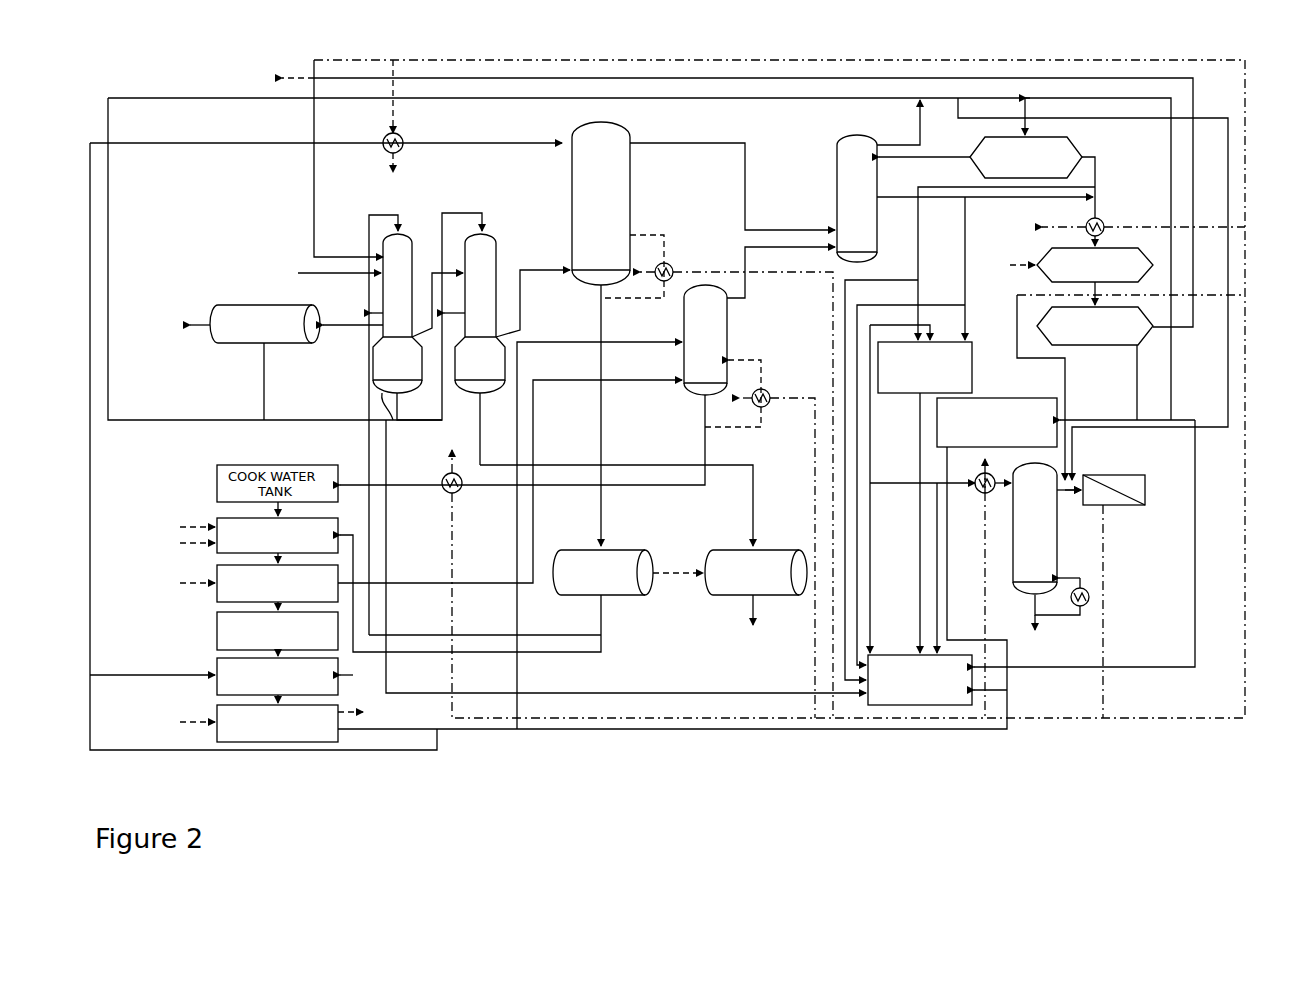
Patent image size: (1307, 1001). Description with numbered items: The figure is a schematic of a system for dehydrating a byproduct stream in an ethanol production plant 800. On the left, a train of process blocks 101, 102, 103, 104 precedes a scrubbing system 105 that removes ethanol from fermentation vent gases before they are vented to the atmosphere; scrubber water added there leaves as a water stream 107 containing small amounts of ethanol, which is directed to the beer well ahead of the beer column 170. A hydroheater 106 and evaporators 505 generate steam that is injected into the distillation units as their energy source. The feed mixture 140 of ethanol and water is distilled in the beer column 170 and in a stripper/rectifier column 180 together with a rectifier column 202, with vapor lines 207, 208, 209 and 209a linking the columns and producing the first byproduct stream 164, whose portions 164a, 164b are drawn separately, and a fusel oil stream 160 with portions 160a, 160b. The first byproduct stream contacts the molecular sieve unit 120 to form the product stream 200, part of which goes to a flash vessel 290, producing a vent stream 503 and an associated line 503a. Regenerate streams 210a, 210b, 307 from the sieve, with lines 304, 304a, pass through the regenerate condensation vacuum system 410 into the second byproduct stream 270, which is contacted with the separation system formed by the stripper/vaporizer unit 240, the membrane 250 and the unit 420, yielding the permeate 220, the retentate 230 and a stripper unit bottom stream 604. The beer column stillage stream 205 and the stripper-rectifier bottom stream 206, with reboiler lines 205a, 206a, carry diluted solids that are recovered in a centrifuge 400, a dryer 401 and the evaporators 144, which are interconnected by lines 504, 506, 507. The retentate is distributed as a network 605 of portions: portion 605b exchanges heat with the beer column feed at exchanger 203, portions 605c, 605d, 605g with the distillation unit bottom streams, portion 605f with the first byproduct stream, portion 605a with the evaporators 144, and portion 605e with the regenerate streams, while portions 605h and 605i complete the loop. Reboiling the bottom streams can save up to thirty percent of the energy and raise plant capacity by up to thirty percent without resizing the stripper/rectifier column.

The slurry tank 101 is at (224, 540).
The hydroheater 102 is at (240, 587).
The liquefaction 103 is at (277, 634).
The fermentation 104 is at (370, 619).
The scrubbing system 105 is at (274, 721).
The hydroheater 106 is at (482, 582).
The water stream 107 is at (400, 732).
The MSU 120 is at (1150, 335).
The feed mixture 140 is at (233, 145).
The evaporators 144 is at (379, 424).
The fusel oil stream 160 is at (890, 197).
The portion of the fusel oil stream 160a is at (962, 250).
The portion of the fusel oil stream 160b is at (895, 290).
The first byproduct stream 164 is at (1095, 172).
The portion of the first byproduct stream 164a is at (980, 186).
The portion of the first byproduct stream 164b is at (908, 258).
The beer column 170 is at (630, 185).
The stripper/rectifier column 180 is at (727, 338).
The product stream 200 is at (780, 78).
The rectifier column 202 is at (837, 185).
The heat exchanger 203 is at (411, 150).
The beer column stillage stream 205 is at (602, 325).
The reboiler line 205a is at (652, 296).
The stripper-rectifier bottom stream 206 is at (703, 410).
The stripper reboiler line 206a is at (735, 428).
The overhead vapor line 207 is at (732, 186).
The stripper vapor line 208 is at (781, 272).
The 190P vapor line 209 is at (901, 122).
The vapor bypass line 209a is at (998, 118).
The regenerate stream 210a is at (900, 423).
The regenerate stream 210b is at (950, 318).
The permeate 220 is at (1117, 470).
The retentate 230 is at (1105, 585).
The stripper/vaporizer unit 240 is at (1057, 550).
The membrane 250 is at (1147, 500).
The second byproduct stream 270 is at (958, 483).
The flash vessel 290 is at (240, 303).
The vaporizer outlet line 304 is at (1060, 277).
The sieve feed line 304a is at (1065, 410).
The regenerate stream 307 is at (1137, 383).
The centrifuge 400 is at (633, 565).
The dryer 401 is at (643, 555).
The regenerate condensation vacuum system 410 is at (973, 365).
The separation system unit 420 is at (930, 710).
The vent stream 503 is at (284, 381).
The tank inlet line 503a is at (344, 384).
The evaporator transfer line 504 is at (437, 294).
The evaporators 505 is at (533, 270).
The evaporator side line 506 is at (365, 301).
The evaporator side line 507 is at (459, 301).
The stripper unit bottom stream 604 is at (1038, 620).
The control boundary 605 is at (1170, 78).
The portion of the retentate 605a is at (345, 60).
The portion of the retentate 605b is at (393, 115).
The portion of the retentate 605c is at (720, 270).
The portion of the retentate 605d is at (797, 398).
The portion of the retentate 605e is at (983, 555).
The portion of the retentate 605f is at (1155, 205).
The portion of the retentate 605g is at (450, 568).
The control line 605h is at (1150, 293).
The control line 605i is at (278, 78).
The plant 800 is at (1084, 736).